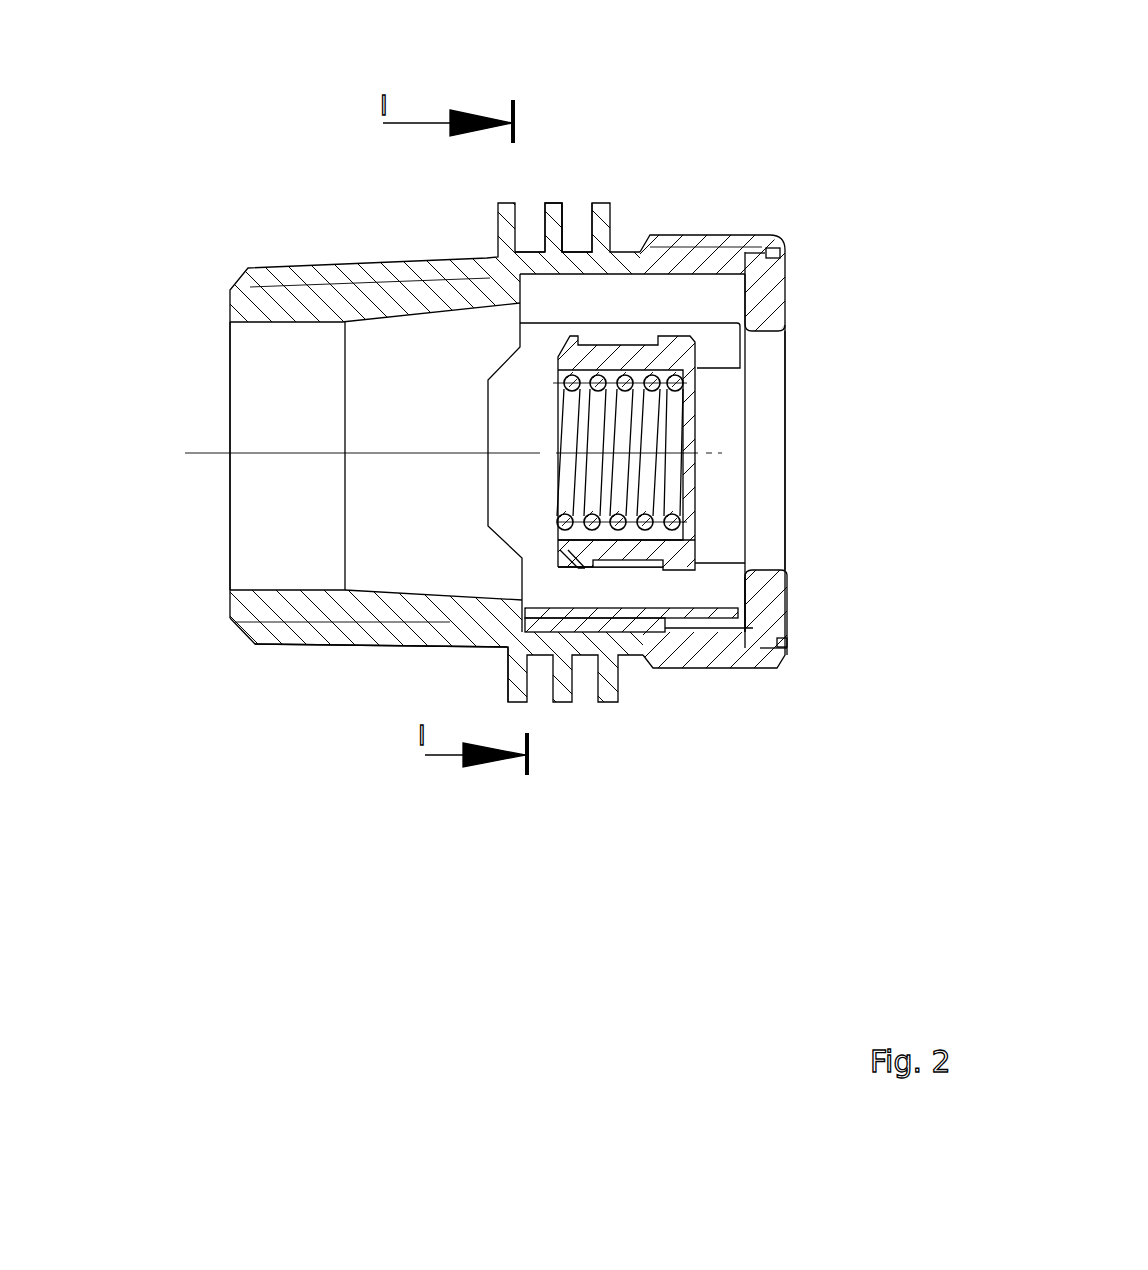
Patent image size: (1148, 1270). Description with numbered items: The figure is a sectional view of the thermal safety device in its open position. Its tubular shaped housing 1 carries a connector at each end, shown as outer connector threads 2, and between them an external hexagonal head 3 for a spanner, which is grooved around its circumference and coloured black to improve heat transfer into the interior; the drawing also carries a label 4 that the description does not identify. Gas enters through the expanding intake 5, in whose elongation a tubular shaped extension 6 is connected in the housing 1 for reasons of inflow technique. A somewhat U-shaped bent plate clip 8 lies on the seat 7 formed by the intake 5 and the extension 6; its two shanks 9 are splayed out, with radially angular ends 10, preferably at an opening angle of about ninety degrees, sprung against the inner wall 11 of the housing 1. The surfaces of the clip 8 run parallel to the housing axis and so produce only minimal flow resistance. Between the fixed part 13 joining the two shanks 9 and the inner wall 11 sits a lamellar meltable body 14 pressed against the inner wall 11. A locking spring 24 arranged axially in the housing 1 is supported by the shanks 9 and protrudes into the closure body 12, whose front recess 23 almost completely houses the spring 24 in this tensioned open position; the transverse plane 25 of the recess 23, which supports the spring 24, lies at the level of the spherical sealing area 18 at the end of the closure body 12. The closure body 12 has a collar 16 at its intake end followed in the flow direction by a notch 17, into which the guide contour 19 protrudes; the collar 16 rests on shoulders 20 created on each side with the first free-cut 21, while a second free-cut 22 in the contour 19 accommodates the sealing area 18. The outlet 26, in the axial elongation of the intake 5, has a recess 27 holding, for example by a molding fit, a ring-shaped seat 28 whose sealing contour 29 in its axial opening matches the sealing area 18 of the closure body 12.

The housing 1 is at (497, 287).
The connector threads 2 is at (248, 282).
The hexagonal head 3 is at (552, 213).
The annular groove 4 is at (575, 213).
The intake 5 is at (257, 555).
The extension 6 is at (643, 298).
The seat 7 is at (555, 242).
The clip 8 is at (480, 513).
The shanks 9 is at (522, 537).
The angular ends 10 is at (517, 382).
The inner wall 11 is at (625, 272).
The closure body 12 is at (731, 470).
The fixed part 13 is at (647, 612).
The meltable body 14 is at (640, 625).
The collar 16 is at (563, 563).
The notch 17 is at (623, 550).
The sealing area 18 is at (788, 654).
The contour 19 is at (637, 568).
The shoulder 20 is at (587, 567).
The first free-cut 21 is at (507, 650).
The second free-cut 22 is at (787, 608).
The recess 23 is at (745, 242).
The locking spring 24 is at (672, 443).
The transverse plane 25 is at (689, 372).
The outlet 26 is at (760, 427).
The recess 27 is at (788, 647).
The ring-shaped seat 28 is at (777, 592).
The sealing contour 29 is at (767, 566).